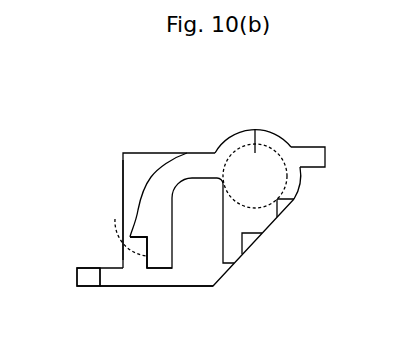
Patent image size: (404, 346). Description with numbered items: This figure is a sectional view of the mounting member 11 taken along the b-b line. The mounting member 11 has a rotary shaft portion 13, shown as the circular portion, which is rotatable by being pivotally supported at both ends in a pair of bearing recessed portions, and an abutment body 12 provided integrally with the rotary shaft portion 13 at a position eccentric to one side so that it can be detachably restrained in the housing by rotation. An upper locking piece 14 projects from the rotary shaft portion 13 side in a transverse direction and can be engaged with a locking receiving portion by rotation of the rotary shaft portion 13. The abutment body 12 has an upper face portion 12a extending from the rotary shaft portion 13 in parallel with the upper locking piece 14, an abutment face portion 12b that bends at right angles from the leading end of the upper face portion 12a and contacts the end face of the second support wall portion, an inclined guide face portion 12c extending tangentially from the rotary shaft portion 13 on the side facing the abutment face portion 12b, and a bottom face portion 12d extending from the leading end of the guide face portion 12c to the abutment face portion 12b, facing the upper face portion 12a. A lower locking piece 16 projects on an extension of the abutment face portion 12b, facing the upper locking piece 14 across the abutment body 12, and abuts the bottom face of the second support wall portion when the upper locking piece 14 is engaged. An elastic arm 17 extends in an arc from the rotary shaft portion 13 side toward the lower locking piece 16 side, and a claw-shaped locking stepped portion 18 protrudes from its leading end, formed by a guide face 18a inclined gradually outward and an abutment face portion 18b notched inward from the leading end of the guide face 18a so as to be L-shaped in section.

The mounting member 11 is at (307, 183).
The abutment body 12 is at (117, 133).
The upper face portion 12a is at (166, 153).
The abutment face portion 12b is at (123, 168).
The guide face portion 12c is at (263, 234).
The bottom face portion 12d is at (193, 287).
The rotary shaft portion 13 is at (272, 148).
The upper locking piece 14 is at (312, 148).
The lower locking piece 16 is at (112, 287).
The elastic arm 17 is at (153, 176).
The locking stepped portion 18 is at (55, 203).
The guide face 18a is at (125, 223).
The abutment face portion 18b is at (147, 257).